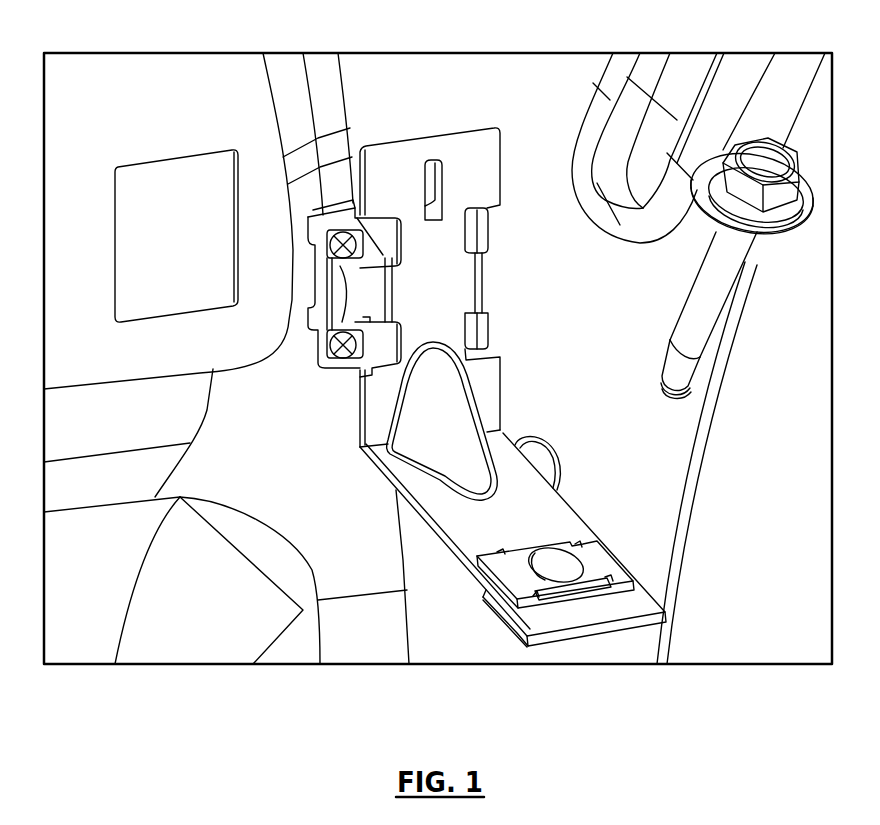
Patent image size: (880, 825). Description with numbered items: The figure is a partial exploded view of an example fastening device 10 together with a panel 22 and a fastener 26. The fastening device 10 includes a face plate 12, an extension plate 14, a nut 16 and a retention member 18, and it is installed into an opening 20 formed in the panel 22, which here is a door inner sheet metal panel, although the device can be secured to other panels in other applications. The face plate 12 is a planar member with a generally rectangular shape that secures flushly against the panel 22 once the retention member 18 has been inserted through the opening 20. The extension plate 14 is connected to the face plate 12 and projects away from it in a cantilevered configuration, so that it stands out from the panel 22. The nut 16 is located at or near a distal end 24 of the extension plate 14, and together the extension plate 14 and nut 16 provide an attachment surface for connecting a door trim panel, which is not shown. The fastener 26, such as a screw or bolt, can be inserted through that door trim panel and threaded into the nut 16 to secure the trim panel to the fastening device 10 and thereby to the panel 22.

The fastening device 10 is at (438, 122).
The face plate 12 is at (445, 317).
The extension plate 14 is at (548, 513).
The nut 16 is at (607, 565).
The retention member 18 is at (322, 318).
The opening 20 is at (160, 160).
The panel 22 is at (233, 70).
The distal end 24 is at (580, 610).
The fastener 26 is at (690, 303).